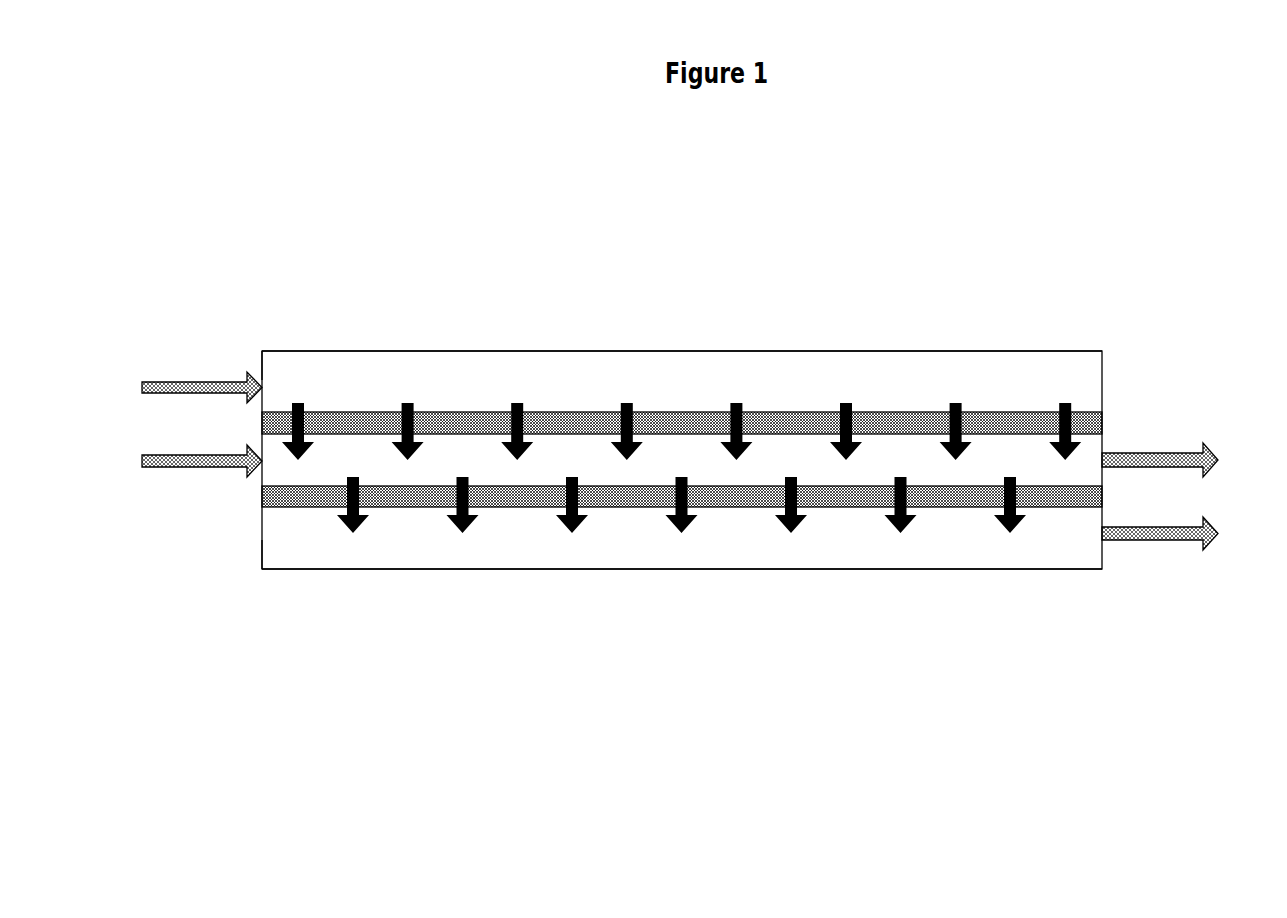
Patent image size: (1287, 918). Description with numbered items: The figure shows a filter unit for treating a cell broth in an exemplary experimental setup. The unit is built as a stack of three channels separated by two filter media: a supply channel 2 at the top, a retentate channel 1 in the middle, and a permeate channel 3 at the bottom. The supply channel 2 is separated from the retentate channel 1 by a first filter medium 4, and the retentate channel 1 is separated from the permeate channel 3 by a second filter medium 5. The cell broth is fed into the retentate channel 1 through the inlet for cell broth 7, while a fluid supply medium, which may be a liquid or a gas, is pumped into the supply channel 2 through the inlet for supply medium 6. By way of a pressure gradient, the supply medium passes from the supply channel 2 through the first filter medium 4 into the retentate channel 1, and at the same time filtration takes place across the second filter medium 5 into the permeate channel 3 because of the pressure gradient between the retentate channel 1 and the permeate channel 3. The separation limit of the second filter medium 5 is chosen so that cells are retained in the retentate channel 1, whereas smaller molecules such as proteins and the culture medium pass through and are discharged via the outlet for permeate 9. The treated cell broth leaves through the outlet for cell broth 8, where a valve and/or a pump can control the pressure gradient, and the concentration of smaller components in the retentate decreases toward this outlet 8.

The retentate channel 1 is at (433, 460).
The supply channel 2 is at (763, 387).
The permeate channel 3 is at (622, 532).
The first filter medium 4 is at (1006, 425).
The second filter medium 5 is at (843, 497).
The inlet for supply medium 6 is at (189, 386).
The inlet for cell broth 7 is at (189, 458).
The outlet for cell broth 8 is at (1193, 461).
The outlet for permeate 9 is at (1193, 532).